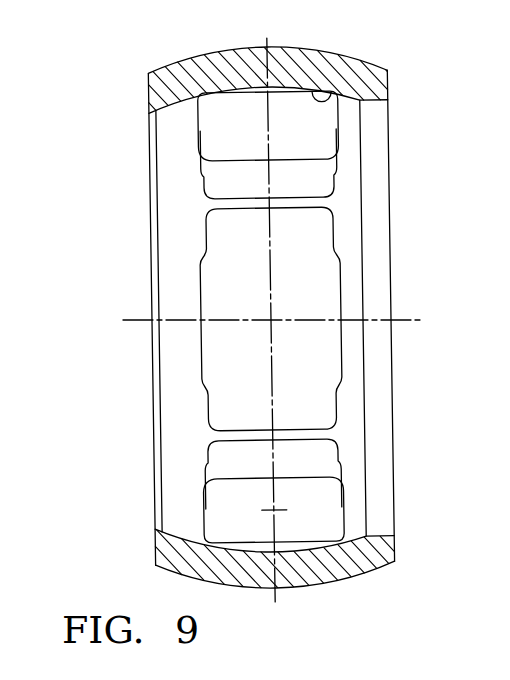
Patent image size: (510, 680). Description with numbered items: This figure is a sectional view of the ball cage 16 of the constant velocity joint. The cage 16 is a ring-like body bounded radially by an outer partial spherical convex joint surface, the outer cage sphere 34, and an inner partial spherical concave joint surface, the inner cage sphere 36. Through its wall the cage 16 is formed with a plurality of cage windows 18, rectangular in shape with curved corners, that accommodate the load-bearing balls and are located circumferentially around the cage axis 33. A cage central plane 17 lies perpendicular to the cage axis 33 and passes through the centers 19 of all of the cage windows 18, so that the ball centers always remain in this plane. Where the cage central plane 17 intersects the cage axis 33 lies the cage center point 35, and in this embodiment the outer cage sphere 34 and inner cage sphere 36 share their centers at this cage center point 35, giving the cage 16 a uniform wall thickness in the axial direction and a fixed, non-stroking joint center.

The outer cage sphere 34 is at (187, 61).
The inner cage sphere 36 is at (335, 99).
The cage 16 is at (151, 143).
The cage windows 18 is at (229, 257).
The cage axis 33 is at (140, 316).
The cage center point 35 is at (272, 322).
The cage central plane 17 is at (268, 465).
The centers of cage windows 19 is at (273, 514).